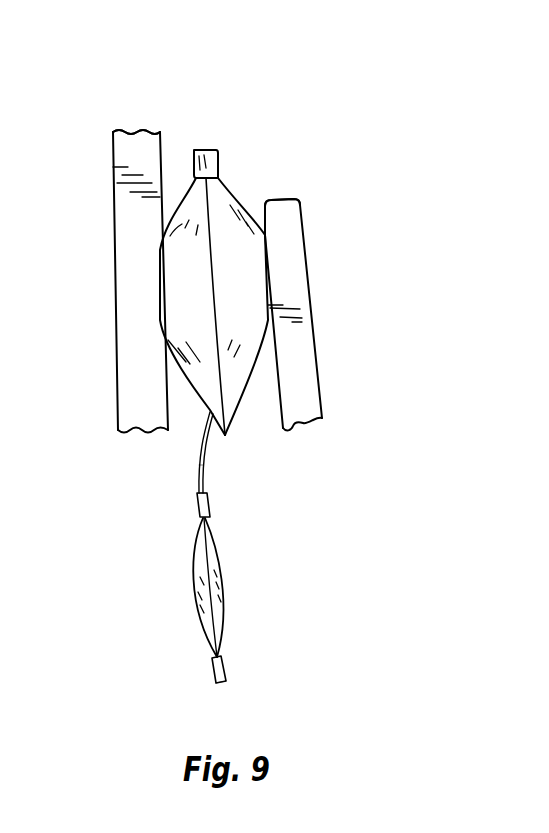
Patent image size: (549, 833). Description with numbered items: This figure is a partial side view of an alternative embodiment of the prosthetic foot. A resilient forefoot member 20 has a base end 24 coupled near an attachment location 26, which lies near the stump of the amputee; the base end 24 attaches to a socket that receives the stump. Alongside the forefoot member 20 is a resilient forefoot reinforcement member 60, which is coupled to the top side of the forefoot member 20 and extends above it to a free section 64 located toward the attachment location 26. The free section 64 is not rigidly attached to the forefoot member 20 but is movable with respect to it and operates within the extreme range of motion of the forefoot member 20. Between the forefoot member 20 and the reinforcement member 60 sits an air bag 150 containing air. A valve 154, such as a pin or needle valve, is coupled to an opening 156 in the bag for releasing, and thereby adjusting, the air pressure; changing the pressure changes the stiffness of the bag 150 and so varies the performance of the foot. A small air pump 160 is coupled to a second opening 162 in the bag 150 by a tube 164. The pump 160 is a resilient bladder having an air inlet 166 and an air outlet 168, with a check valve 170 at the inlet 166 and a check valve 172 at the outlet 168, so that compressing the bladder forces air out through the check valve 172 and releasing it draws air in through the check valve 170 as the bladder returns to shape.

The forefoot member 20 is at (117, 408).
The base end 24 is at (113, 150).
The attachment location 26 is at (113, 133).
The forefoot reinforcement member 60 is at (322, 402).
The free section 64 is at (305, 232).
The air bag 150 is at (243, 203).
The valve 154 is at (213, 150).
The opening 156 is at (220, 178).
The air pump 160 is at (220, 558).
The opening 162 is at (210, 412).
The tube 164 is at (197, 465).
The air inlet 166 is at (222, 652).
The air outlet 168 is at (210, 500).
The check valve 170 is at (212, 670).
The check valve 172 is at (197, 507).